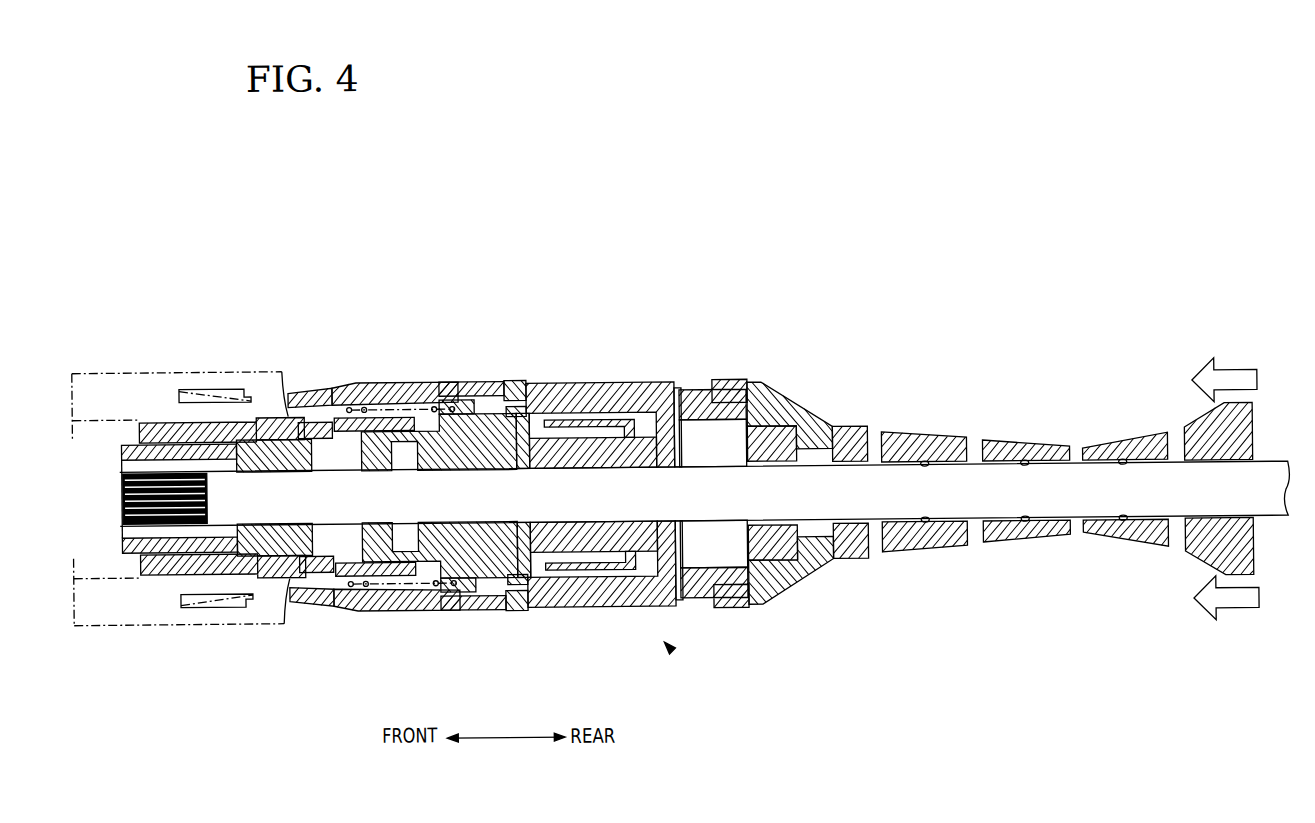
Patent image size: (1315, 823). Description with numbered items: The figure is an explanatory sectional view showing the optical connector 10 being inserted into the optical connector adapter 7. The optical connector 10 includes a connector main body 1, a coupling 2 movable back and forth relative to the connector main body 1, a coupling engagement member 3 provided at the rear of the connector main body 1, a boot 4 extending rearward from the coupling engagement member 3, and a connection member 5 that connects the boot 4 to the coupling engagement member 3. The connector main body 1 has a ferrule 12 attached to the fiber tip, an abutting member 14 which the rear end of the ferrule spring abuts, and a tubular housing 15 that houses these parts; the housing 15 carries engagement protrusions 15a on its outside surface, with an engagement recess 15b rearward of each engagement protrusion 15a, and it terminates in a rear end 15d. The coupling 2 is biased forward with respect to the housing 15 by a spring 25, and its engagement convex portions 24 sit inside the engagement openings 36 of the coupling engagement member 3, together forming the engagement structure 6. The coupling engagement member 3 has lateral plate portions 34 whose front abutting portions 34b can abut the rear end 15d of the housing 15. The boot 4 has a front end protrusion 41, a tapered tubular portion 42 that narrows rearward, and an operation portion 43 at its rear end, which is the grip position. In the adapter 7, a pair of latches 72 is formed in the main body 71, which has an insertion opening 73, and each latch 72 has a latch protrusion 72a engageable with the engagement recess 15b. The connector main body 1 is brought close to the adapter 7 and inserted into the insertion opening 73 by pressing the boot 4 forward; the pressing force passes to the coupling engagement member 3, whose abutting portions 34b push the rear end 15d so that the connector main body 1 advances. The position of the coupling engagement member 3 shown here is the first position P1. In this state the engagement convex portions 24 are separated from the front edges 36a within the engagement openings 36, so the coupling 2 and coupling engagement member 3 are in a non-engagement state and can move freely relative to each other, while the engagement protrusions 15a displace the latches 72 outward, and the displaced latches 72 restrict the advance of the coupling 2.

The connector main body 1 is at (150, 421).
The coupling 2 is at (356, 385).
The coupling engagement member 3 is at (648, 390).
The boot 4 is at (1022, 449).
The connection member 5 is at (768, 391).
The engagement structure 6 is at (554, 301).
The optical connector adapter 7 is at (206, 373).
The optical connector 10 is at (1001, 300).
The ferrule 12 is at (112, 443).
The abutting member 14 is at (403, 432).
The housing 15 is at (462, 386).
The engagement protrusion 15a is at (266, 394).
The engagement recess 15b is at (322, 407).
The rear end 15d is at (546, 404).
The engagement convex portion 24 is at (492, 403).
The spring 25 is at (372, 386).
The lateral plate portion 34 is at (596, 396).
The abutting portion 34b is at (512, 522).
The engagement opening 36 is at (508, 398).
The front edge 36a is at (450, 387).
The front end protrusion 41 is at (796, 418).
The tapered tubular portion 42 is at (927, 440).
The operation portion 43 is at (1236, 413).
The main body 71 is at (247, 390).
The latch 72 is at (285, 418).
The latch protrusion 72a is at (313, 522).
The insertion opening 73 is at (104, 636).
The first position P1 is at (663, 647).